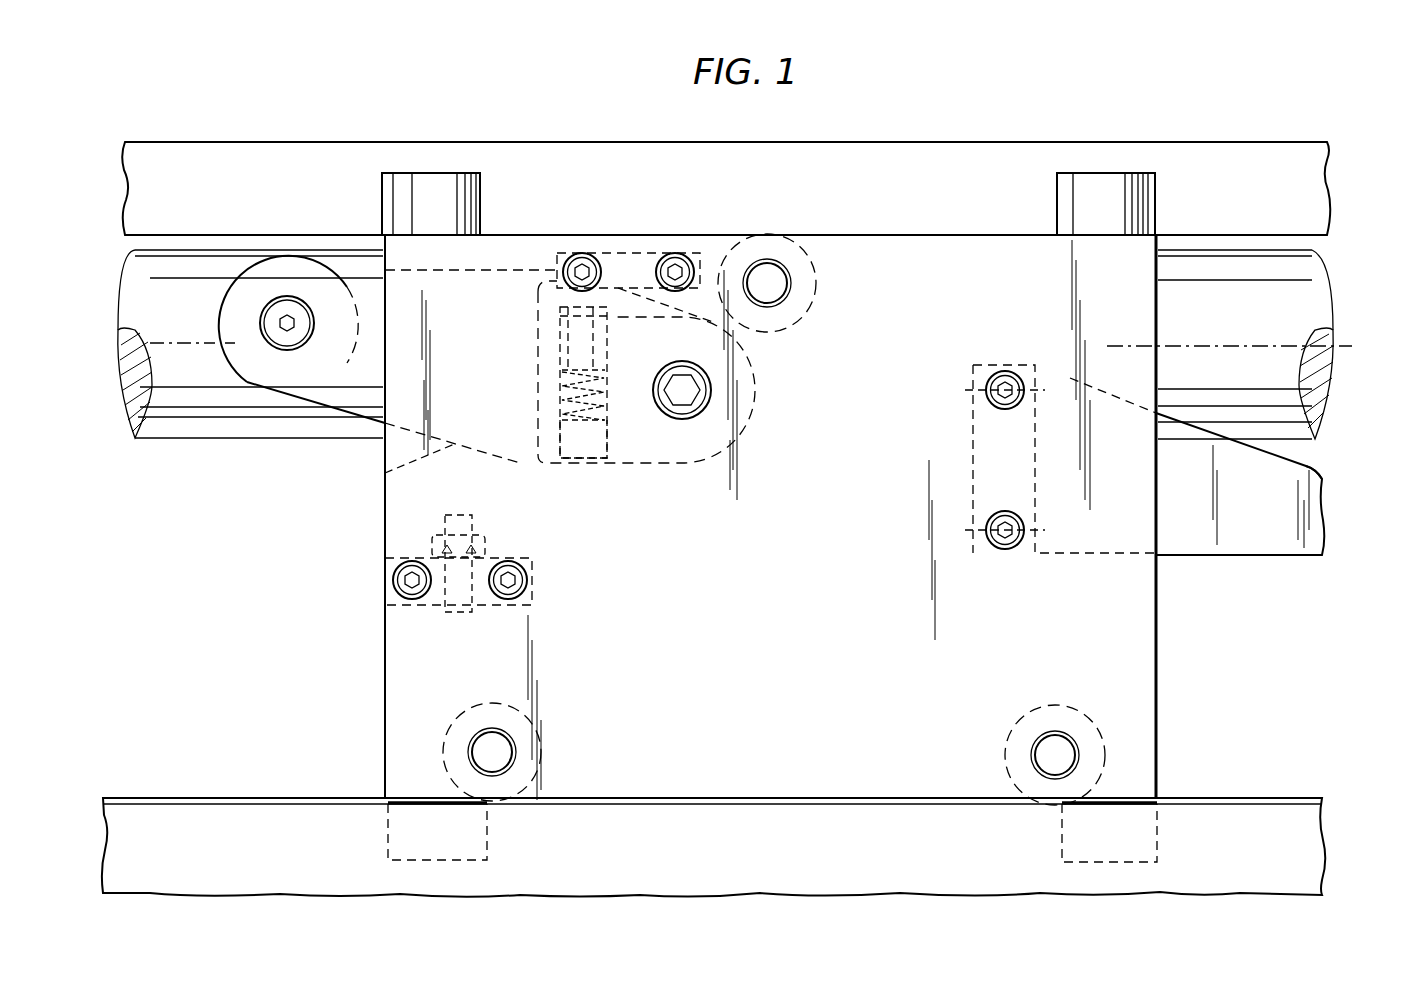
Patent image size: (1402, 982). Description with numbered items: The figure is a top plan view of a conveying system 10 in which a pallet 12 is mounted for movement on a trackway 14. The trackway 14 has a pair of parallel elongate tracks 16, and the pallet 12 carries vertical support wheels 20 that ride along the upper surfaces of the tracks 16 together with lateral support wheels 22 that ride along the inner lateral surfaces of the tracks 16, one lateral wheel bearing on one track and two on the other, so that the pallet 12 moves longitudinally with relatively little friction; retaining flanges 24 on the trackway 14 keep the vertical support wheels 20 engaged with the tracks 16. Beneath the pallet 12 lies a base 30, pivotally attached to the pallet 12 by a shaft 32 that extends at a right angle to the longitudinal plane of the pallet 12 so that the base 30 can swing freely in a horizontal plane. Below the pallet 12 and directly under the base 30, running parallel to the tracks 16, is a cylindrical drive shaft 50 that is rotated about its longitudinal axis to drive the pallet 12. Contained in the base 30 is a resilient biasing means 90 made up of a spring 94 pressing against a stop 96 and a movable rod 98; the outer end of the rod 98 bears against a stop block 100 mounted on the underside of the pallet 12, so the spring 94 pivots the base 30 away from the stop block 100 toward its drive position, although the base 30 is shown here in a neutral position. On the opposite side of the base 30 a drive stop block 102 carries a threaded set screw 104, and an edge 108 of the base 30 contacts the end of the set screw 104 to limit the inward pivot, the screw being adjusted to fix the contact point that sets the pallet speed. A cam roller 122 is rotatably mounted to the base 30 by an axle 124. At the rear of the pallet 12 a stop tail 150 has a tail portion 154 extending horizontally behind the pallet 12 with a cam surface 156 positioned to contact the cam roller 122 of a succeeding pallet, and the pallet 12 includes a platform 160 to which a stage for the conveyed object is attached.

The conveying system 10 is at (240, 550).
The pallet 12 is at (378, 642).
The trackway 14 is at (224, 158).
The elongate tracks 16 is at (903, 198).
The vertical support wheels 20 is at (431, 184).
The lateral support wheels 22 is at (812, 263).
The retaining flanges 24 is at (796, 862).
The base 30 is at (535, 466).
The shaft 32 is at (684, 390).
The drive shaft 50 is at (1232, 325).
The resilient biasing means 90 is at (568, 379).
The spring 94 is at (560, 405).
The stop 96 is at (606, 440).
The movable rod 98 is at (558, 333).
The stop block 100 is at (652, 252).
The drive stop block 102 is at (535, 568).
The set screw 104 is at (474, 528).
The edge 108 is at (385, 473).
The cam roller 122 is at (245, 376).
The axle 124 is at (262, 316).
The stop tail 150 is at (1173, 498).
The tail portion 154 is at (1274, 526).
The cam surface 156 is at (1308, 466).
The platform 160 is at (764, 621).